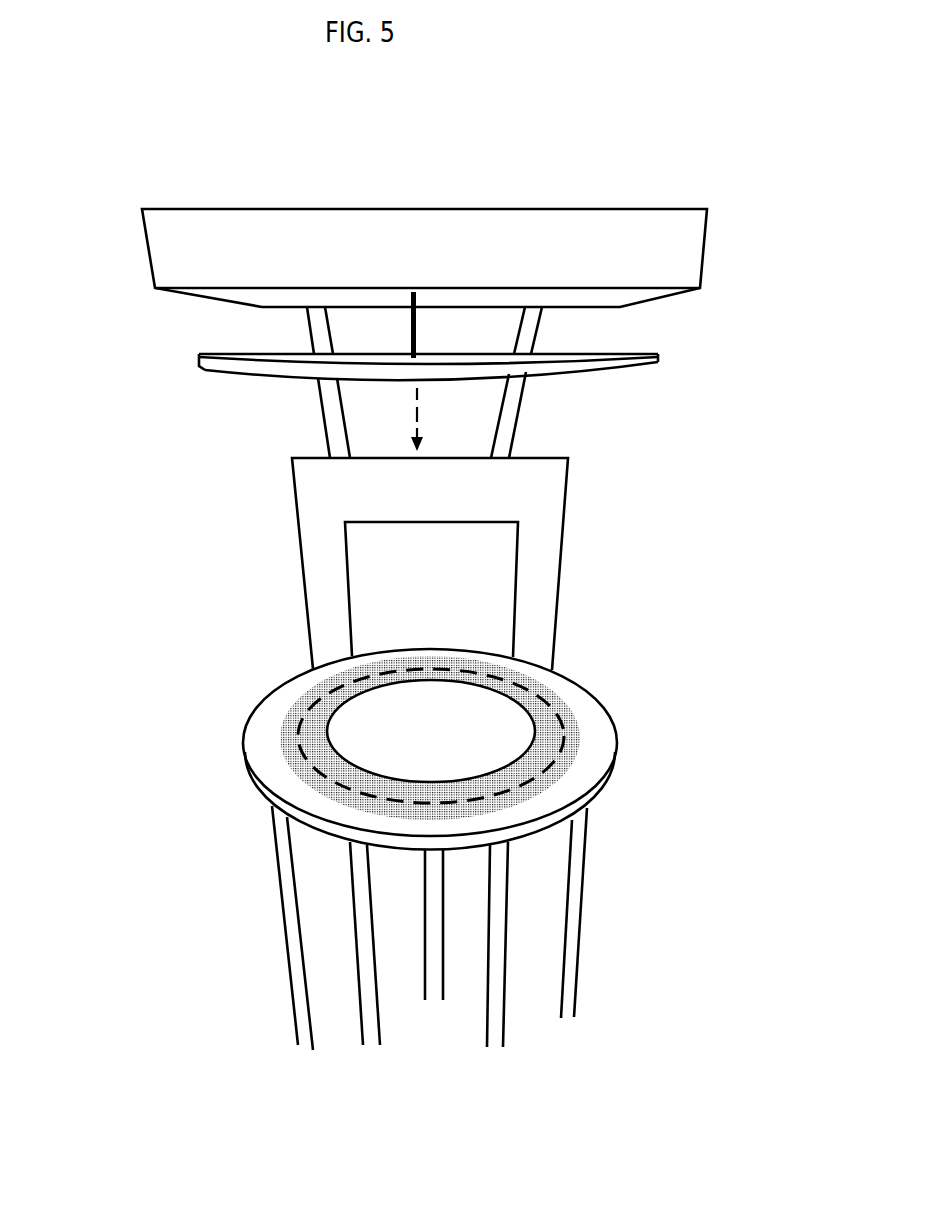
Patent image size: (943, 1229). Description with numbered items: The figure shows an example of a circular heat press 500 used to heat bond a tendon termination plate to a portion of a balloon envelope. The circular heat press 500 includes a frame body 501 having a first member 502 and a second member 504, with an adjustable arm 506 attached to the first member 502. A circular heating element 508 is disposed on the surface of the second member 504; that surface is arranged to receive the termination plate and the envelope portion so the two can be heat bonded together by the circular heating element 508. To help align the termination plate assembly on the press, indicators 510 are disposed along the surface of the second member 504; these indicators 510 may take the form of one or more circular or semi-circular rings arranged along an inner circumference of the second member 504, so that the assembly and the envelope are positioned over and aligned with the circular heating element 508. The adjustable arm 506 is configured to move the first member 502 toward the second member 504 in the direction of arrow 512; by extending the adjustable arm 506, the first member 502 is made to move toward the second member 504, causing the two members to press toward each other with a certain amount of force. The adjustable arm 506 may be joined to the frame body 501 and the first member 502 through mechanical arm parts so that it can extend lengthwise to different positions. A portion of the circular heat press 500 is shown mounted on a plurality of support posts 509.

The circular heat press 500 is at (836, 45).
The frame body 501 is at (145, 248).
The first member 502 is at (217, 367).
The second member 504 is at (263, 768).
The adjustable arm 506 is at (416, 328).
The circular heating element 508 is at (580, 737).
The support posts 509 is at (370, 918).
The indicators 510 is at (563, 768).
The arrow 512 is at (415, 417).